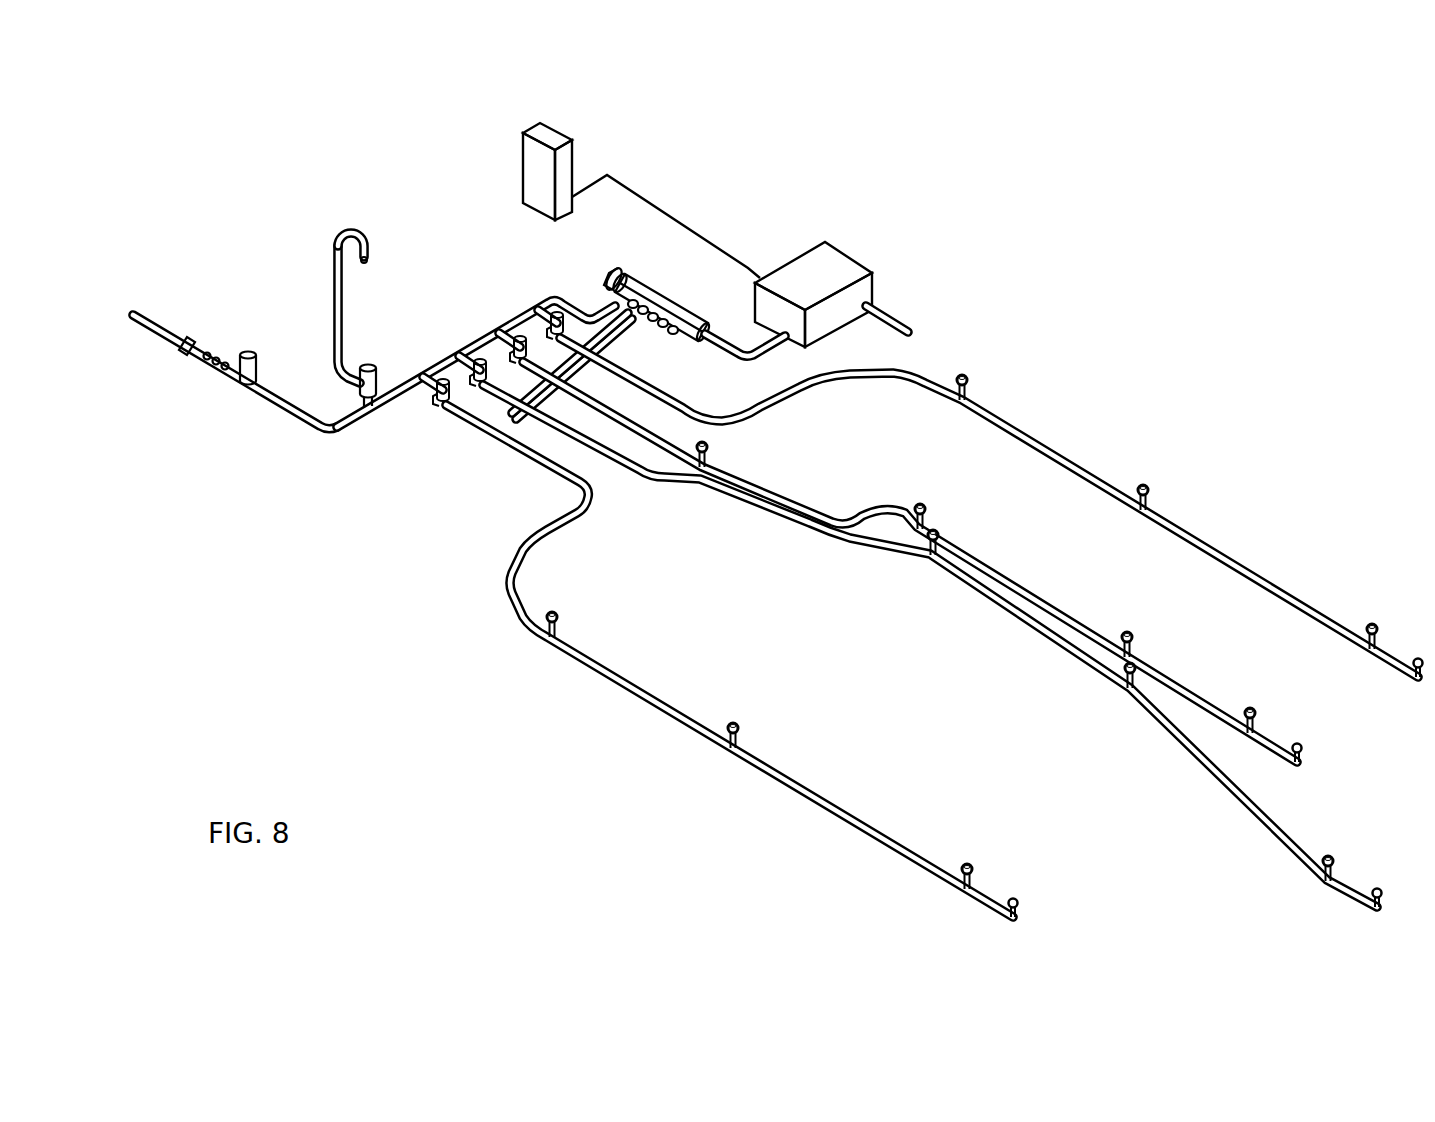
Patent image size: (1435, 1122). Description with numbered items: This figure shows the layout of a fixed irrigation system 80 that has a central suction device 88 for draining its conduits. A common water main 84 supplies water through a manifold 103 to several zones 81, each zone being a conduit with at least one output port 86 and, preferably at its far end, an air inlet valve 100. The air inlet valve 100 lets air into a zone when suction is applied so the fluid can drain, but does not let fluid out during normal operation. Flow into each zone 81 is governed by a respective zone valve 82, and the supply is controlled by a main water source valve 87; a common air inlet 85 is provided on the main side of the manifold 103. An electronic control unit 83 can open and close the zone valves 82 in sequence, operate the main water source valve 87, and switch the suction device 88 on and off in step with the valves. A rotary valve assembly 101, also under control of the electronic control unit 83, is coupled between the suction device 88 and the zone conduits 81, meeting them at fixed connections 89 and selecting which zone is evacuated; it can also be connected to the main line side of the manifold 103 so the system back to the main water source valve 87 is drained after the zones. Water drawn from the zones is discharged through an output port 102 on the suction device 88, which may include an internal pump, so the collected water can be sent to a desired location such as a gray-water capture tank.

The system 80 is at (1130, 175).
The zones 81 is at (1208, 543).
The zone valves 82 is at (440, 405).
The electronic control unit (ECU) 83 is at (578, 150).
The common water main 84 is at (162, 325).
The common air inlet 85 is at (341, 220).
The output port 86 is at (973, 372).
The main water source valve 87 is at (180, 357).
The central suction device 88 is at (851, 247).
The fixed connections 89 is at (513, 433).
The air inlet valve 100 is at (1018, 893).
The rotary valve assembly 101 is at (620, 272).
The output port 102 is at (918, 316).
The manifold 103 is at (510, 322).